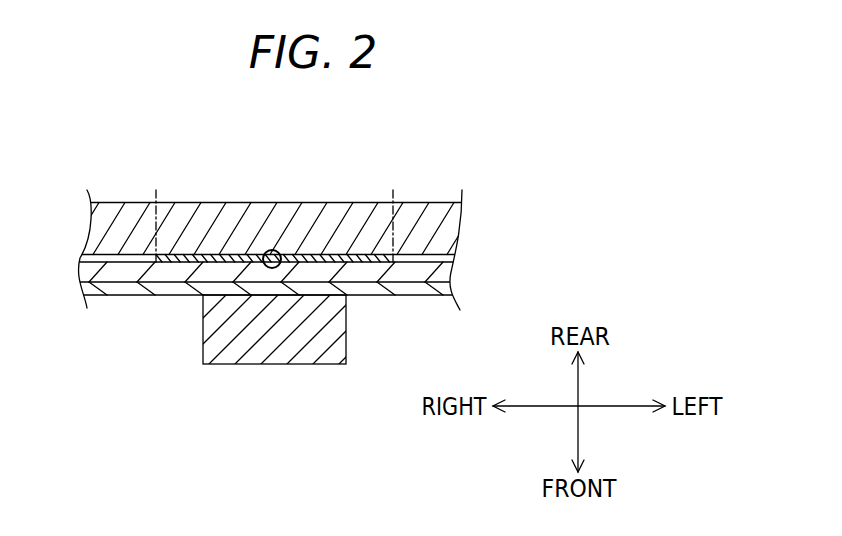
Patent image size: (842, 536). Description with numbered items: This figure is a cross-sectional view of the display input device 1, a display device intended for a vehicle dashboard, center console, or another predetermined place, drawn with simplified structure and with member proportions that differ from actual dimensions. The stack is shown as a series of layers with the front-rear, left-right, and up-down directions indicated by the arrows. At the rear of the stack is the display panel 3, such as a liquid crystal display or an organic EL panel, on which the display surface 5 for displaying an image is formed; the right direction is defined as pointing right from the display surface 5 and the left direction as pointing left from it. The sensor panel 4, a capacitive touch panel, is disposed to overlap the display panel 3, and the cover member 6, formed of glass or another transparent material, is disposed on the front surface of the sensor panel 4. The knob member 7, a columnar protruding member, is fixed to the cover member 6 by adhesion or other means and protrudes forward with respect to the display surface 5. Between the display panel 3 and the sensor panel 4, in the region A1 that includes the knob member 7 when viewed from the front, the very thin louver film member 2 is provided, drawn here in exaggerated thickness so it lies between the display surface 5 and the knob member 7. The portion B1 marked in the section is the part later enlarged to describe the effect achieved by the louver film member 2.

The display input device 1 is at (275, 264).
The louver film member 2 is at (357, 261).
The display panel 3 is at (447, 229).
The sensor panel 4 is at (440, 272).
The display surface 5 is at (180, 260).
The cover member 6 is at (447, 288).
The knob member 7 is at (276, 357).
The region A1 is at (393, 196).
The portion B1 is at (282, 265).